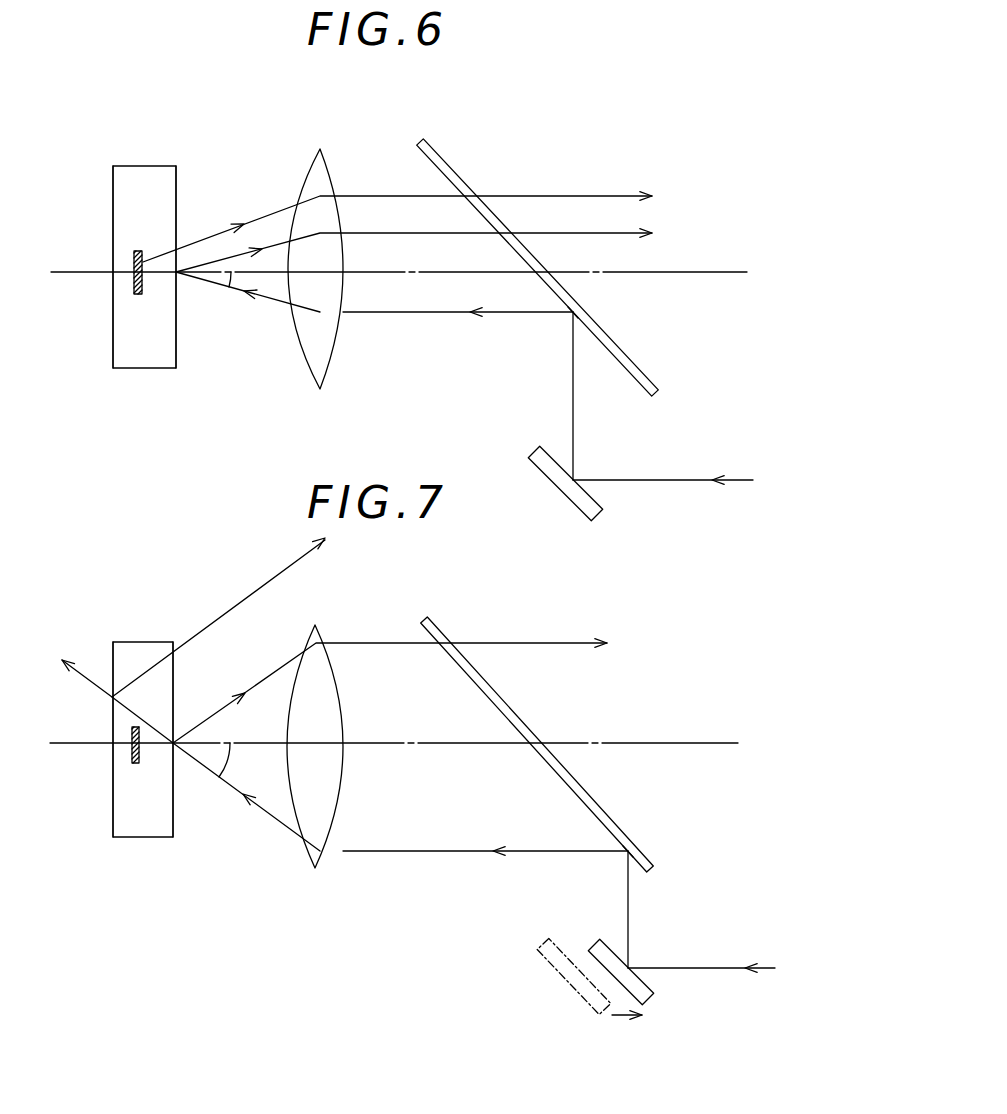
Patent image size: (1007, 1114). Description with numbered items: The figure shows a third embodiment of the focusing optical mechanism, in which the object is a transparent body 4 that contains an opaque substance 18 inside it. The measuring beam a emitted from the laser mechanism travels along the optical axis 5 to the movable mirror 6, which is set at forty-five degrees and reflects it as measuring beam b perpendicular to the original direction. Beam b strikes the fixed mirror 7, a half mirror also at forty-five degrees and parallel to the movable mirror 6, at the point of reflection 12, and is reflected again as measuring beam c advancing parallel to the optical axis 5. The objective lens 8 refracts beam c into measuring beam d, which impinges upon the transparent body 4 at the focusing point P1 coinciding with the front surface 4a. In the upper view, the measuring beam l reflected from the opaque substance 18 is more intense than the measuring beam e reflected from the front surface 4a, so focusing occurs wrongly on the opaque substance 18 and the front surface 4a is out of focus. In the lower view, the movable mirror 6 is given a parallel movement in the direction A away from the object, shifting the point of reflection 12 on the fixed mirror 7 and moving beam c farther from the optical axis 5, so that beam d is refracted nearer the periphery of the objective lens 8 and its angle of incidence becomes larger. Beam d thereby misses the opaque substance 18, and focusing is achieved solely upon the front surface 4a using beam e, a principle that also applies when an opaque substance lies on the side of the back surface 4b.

In FIG. 6, the transparent body 4 is at (145, 166).
In FIG. 7, the transparent body 4 is at (143, 642).
In FIG. 6, the front surface 4a is at (177, 343).
In FIG. 7, the front surface 4a is at (173, 822).
In FIG. 6, the back surface 4b is at (113, 357).
In FIG. 7, the back surface 4b is at (112, 817).
In FIG. 6, the opaque substance 18 is at (134, 296).
In FIG. 7, the opaque substance 18 is at (130, 763).
In FIG. 6, the objective lens 8 is at (312, 168).
In FIG. 7, the objective lens 8 is at (315, 746).
In FIG. 6, the fixed mirror 7 is at (447, 163).
In FIG. 7, the fixed mirror 7 is at (440, 632).
In FIG. 6, the point of reflection 12 is at (575, 315).
In FIG. 7, the point of reflection 12 is at (632, 846).
In FIG. 6, the optical axis 5 is at (687, 273).
In FIG. 7, the optical axis 5 is at (682, 752).
In FIG. 6, the movable mirror 6 is at (602, 505).
In FIG. 7, the movable mirror 6 is at (598, 963).
In FIG. 6, the measuring beam l is at (217, 228).
In FIG. 7, the measuring beam l is at (233, 608).
In FIG. 6, the measuring beam e is at (277, 245).
In FIG. 7, the measuring beam e is at (218, 712).
In FIG. 6, the measuring beam d is at (270, 303).
In FIG. 7, the measuring beam d is at (263, 812).
In FIG. 6, the measuring beam c is at (442, 317).
In FIG. 7, the measuring beam c is at (392, 855).
In FIG. 6, the measuring beam b is at (568, 400).
In FIG. 7, the measuring beam b is at (623, 902).
In FIG. 6, the measuring beam a is at (672, 480).
In FIG. 7, the measuring beam a is at (718, 968).
In FIG. 6, the focusing point P1 is at (178, 275).
In FIG. 7, the focusing point P1 is at (177, 747).
In FIG. 7, the direction A is at (617, 1022).